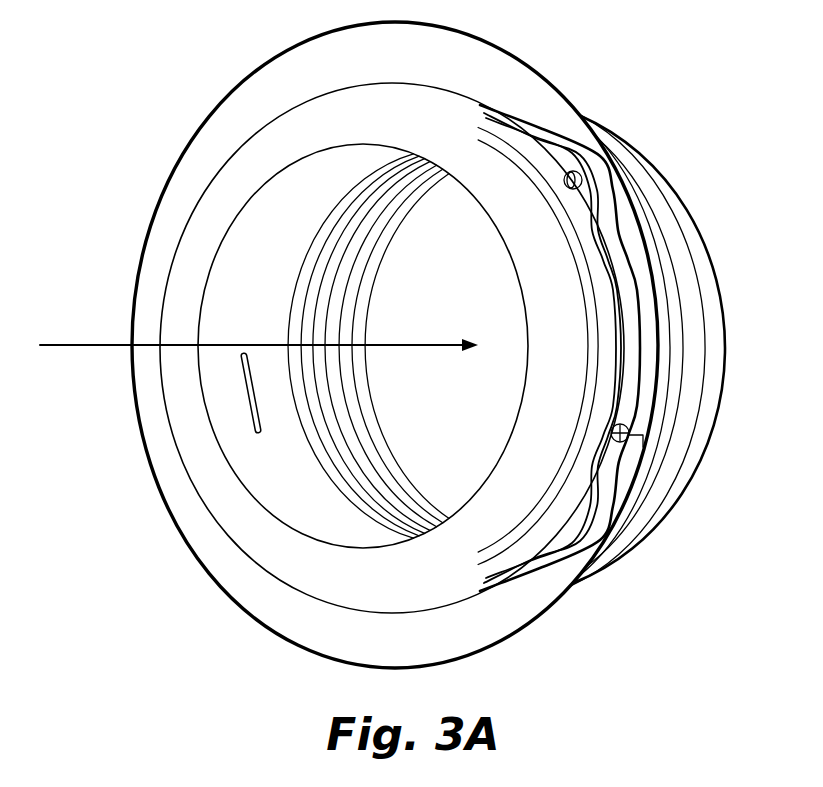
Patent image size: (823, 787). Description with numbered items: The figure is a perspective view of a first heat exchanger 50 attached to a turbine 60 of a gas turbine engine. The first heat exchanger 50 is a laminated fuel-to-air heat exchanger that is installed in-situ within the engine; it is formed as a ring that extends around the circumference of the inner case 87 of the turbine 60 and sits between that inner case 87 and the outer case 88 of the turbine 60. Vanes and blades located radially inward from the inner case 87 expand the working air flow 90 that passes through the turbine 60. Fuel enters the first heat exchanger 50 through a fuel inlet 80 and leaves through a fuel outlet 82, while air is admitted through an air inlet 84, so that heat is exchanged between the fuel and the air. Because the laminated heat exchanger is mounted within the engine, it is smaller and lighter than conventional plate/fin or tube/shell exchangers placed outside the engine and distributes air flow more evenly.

The first heat exchanger 50 is at (529, 113).
The turbine 60 is at (676, 120).
The fuel inlet 80 is at (629, 431).
The fuel outlet 82 is at (582, 175).
The air inlet 84 is at (631, 308).
The inner case 87 is at (228, 175).
The outer case 88 is at (294, 73).
The working air flow 90 is at (258, 325).